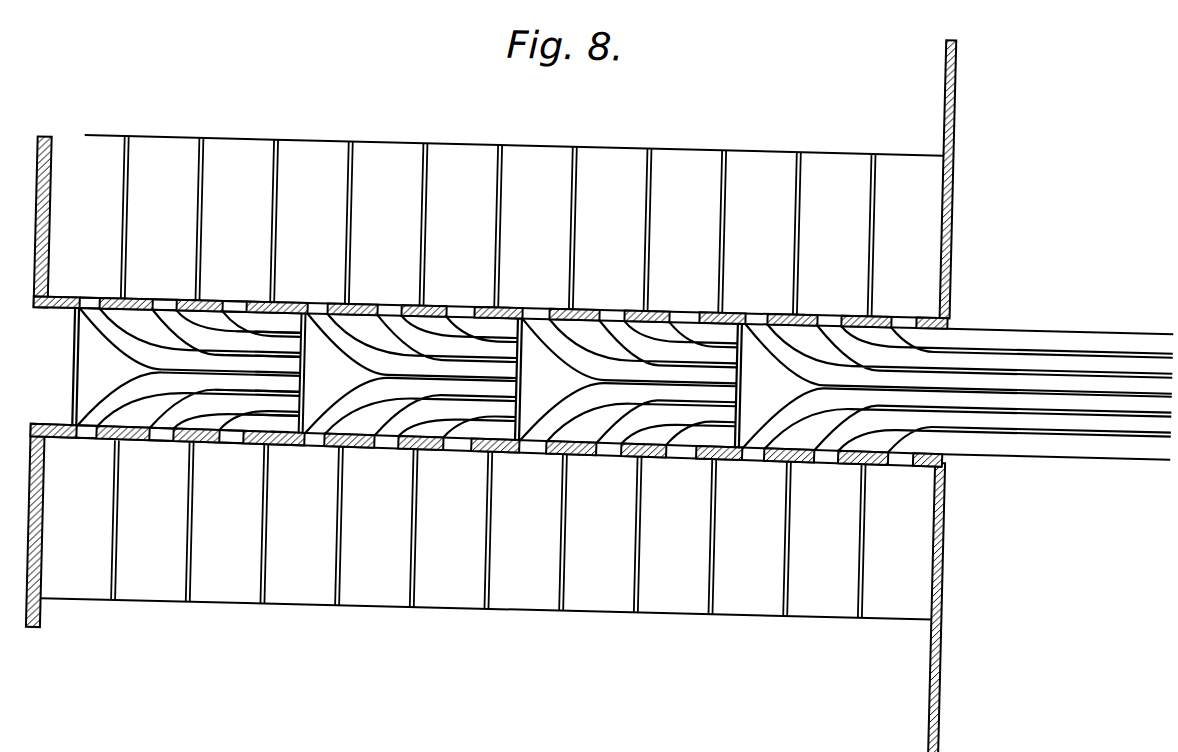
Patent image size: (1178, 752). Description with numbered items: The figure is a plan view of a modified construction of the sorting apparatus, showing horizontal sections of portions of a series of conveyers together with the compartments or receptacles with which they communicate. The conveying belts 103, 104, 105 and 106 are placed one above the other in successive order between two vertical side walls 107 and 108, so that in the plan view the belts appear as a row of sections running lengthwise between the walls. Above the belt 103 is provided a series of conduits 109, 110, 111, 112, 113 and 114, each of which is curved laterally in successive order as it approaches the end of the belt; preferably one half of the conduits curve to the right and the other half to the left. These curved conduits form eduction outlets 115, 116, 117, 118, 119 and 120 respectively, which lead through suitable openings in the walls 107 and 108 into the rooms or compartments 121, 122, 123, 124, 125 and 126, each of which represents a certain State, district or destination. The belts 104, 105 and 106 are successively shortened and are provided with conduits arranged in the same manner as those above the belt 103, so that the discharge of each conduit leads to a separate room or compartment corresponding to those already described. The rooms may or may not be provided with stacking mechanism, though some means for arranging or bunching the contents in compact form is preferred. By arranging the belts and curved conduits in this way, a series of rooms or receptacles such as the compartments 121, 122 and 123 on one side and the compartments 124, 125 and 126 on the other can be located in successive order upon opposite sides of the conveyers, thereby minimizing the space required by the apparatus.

The conveying belt 103 is at (186, 370).
The conveying belt 104 is at (411, 375).
The conveying belt 105 is at (626, 383).
The conveying belt 106 is at (954, 391).
The vertical side wall 107 is at (56, 321).
The vertical side wall 108 is at (51, 436).
The conduit 109 is at (286, 310).
The conduit 110 is at (268, 341).
The conduit 111 is at (258, 363).
The conduit 112 is at (257, 384).
The conduit 113 is at (267, 406).
The conduit 114 is at (275, 436).
The eduction outlet 115 is at (248, 318).
The eduction outlet 116 is at (170, 318).
The eduction outlet 117 is at (94, 314).
The eduction outlet 118 is at (90, 454).
The eduction outlet 119 is at (162, 454).
The eduction outlet 120 is at (246, 446).
The room or compartment 121 is at (247, 220).
The room or compartment 122 is at (170, 218).
The room or compartment 123 is at (94, 217).
The room or compartment 124 is at (85, 519).
The room or compartment 125 is at (160, 521).
The room or compartment 126 is at (237, 523).